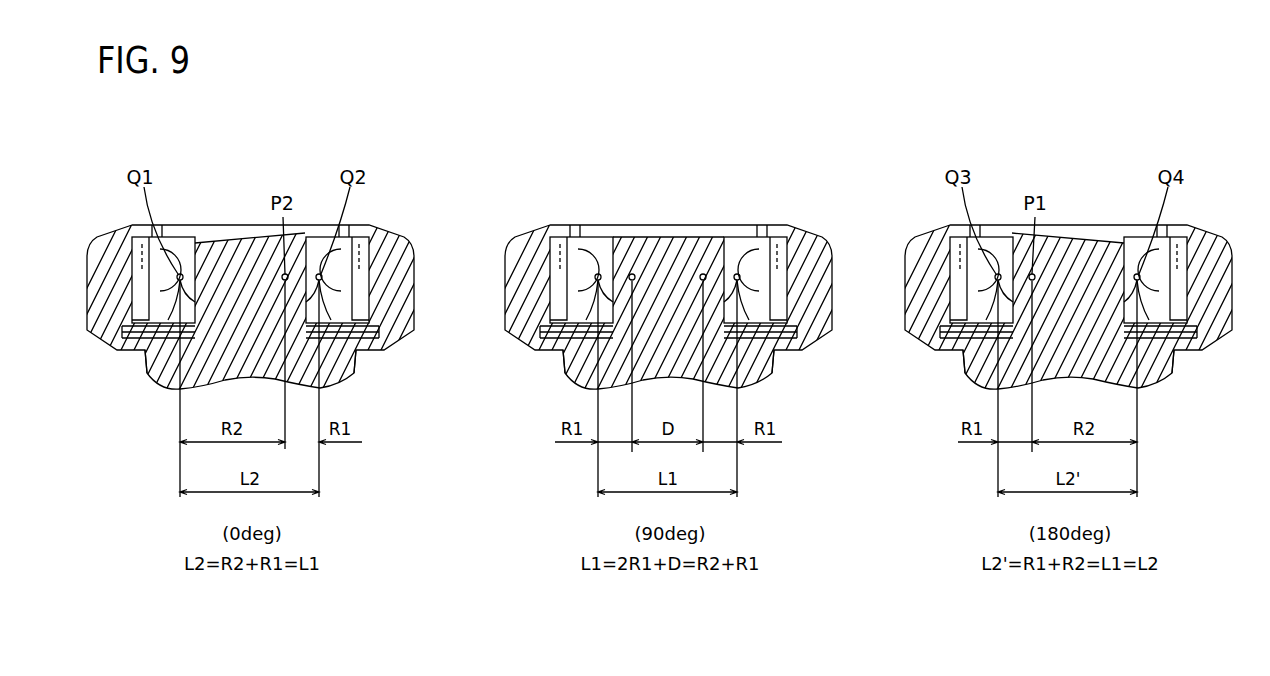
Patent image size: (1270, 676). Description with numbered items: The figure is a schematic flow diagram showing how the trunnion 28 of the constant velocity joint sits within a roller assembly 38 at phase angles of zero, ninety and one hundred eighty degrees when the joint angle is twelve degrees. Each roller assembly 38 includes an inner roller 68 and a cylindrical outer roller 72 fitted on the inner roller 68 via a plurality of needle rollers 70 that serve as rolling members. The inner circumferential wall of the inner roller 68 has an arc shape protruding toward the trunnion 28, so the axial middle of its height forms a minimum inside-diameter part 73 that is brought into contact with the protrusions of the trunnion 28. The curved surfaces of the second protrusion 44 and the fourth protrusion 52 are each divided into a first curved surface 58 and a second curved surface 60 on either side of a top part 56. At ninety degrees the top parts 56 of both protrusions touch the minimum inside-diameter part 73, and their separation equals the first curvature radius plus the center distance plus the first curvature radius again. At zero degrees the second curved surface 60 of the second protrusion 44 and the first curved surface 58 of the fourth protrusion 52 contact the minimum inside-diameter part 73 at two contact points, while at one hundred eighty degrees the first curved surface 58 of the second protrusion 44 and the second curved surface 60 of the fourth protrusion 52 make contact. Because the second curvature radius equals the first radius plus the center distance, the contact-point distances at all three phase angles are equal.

The trunnion 28 is at (659, 205).
The roller assembly 38 is at (627, 381).
The second protrusion 44 is at (551, 225).
The fourth protrusion 52 is at (767, 225).
The top part 56 is at (659, 228).
The first curved surface 58 is at (658, 223).
The second curved surface 60 is at (659, 243).
The inner roller 68 is at (543, 342).
The needle roller 70 is at (769, 345).
The outer roller 72 is at (674, 307).
The minimum inside-diameter part 73 is at (658, 249).